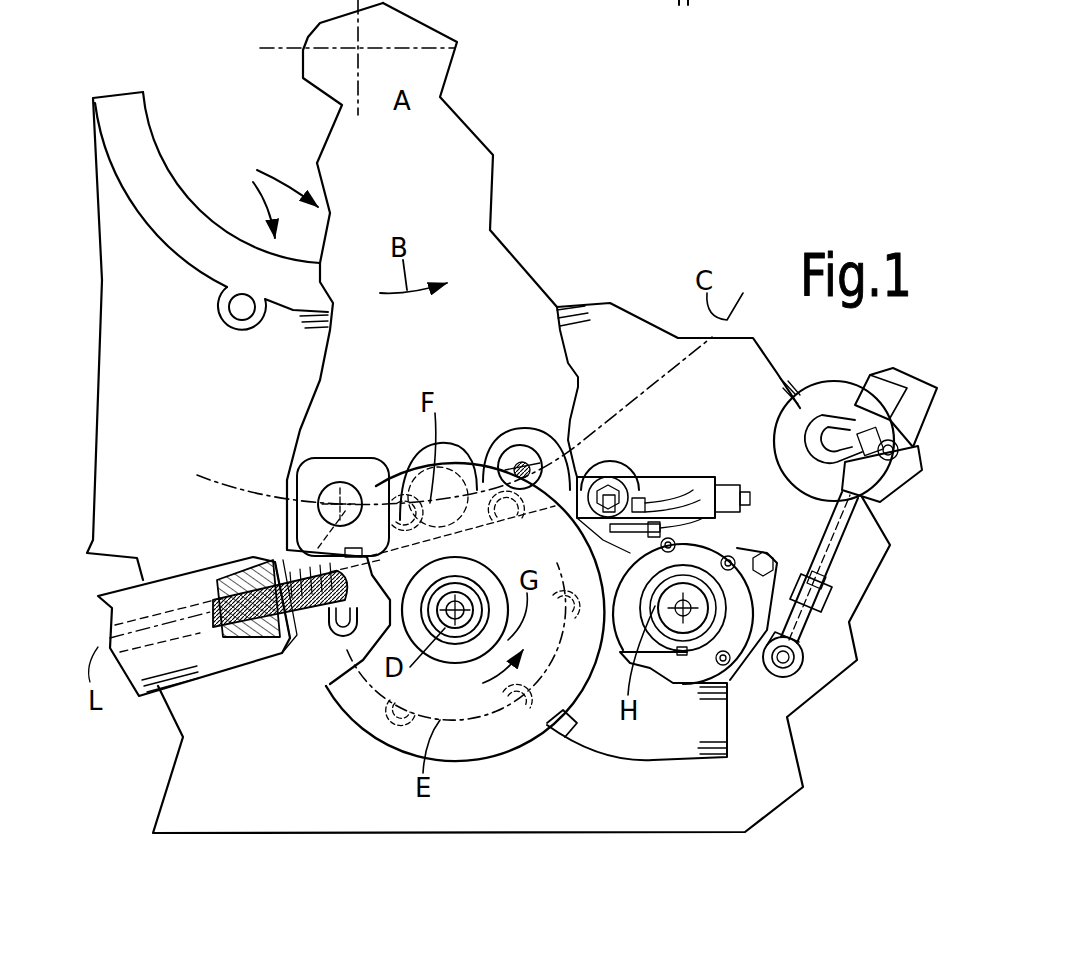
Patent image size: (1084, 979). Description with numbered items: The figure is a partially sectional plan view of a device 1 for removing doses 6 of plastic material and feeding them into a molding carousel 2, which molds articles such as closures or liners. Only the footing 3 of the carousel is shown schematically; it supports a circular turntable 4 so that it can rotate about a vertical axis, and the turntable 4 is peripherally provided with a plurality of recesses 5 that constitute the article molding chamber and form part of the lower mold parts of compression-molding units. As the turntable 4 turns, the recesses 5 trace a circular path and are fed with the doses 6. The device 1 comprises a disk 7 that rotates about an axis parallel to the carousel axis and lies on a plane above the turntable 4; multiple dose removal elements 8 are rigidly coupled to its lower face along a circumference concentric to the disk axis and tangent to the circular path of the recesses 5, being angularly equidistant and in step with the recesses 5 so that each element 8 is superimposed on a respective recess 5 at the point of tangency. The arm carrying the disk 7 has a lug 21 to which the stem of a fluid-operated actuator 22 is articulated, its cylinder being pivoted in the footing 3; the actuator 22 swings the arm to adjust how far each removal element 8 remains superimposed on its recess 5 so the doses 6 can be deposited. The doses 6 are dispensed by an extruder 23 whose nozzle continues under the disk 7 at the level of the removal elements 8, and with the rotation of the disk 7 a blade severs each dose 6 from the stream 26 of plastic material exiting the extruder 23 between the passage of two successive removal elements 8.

The device 1 is at (300, 727).
The molding carousel 2 is at (276, 193).
The footing 3 is at (161, 372).
The circular turntable 4 is at (470, 203).
The recesses 5 is at (500, 447).
The doses 6 is at (523, 467).
The disk 7 is at (487, 740).
The dose removal elements 8 is at (320, 640).
The lug 21 is at (752, 655).
The fluid-operated actuator 22 is at (894, 493).
The extruder 23 is at (170, 578).
The stream 26 is at (240, 577).